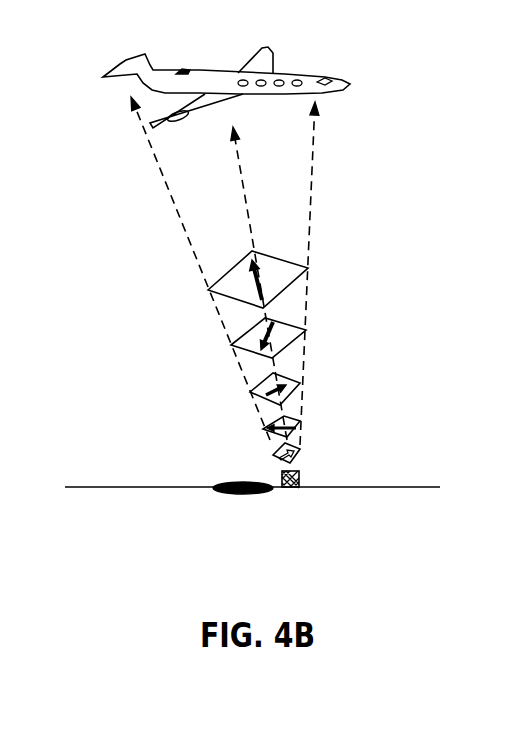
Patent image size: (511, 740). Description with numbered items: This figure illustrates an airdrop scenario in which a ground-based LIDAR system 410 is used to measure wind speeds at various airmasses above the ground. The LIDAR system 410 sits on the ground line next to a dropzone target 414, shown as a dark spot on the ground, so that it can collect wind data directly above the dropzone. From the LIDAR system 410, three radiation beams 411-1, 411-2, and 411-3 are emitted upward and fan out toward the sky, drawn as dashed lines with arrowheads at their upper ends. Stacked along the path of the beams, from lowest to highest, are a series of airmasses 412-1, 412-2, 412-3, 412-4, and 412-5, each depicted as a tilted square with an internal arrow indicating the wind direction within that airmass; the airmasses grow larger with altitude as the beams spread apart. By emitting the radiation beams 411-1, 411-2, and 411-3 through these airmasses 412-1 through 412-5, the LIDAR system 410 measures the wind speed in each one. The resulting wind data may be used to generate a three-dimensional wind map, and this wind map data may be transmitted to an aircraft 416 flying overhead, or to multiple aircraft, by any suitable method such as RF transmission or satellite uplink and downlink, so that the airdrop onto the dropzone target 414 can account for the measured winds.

The aircraft 416 is at (352, 80).
The radiation beam 411-1 is at (150, 155).
The radiation beam 411-2 is at (240, 169).
The radiation beam 411-3 is at (314, 150).
The airmass 412-5 is at (308, 268).
The airmass 412-4 is at (306, 330).
The airmass 412-3 is at (300, 383).
The airmass 412-2 is at (300, 421).
The airmass 412-1 is at (300, 450).
The ground-based LIDAR system 410 is at (299, 479).
The dropzone target 414 is at (222, 494).